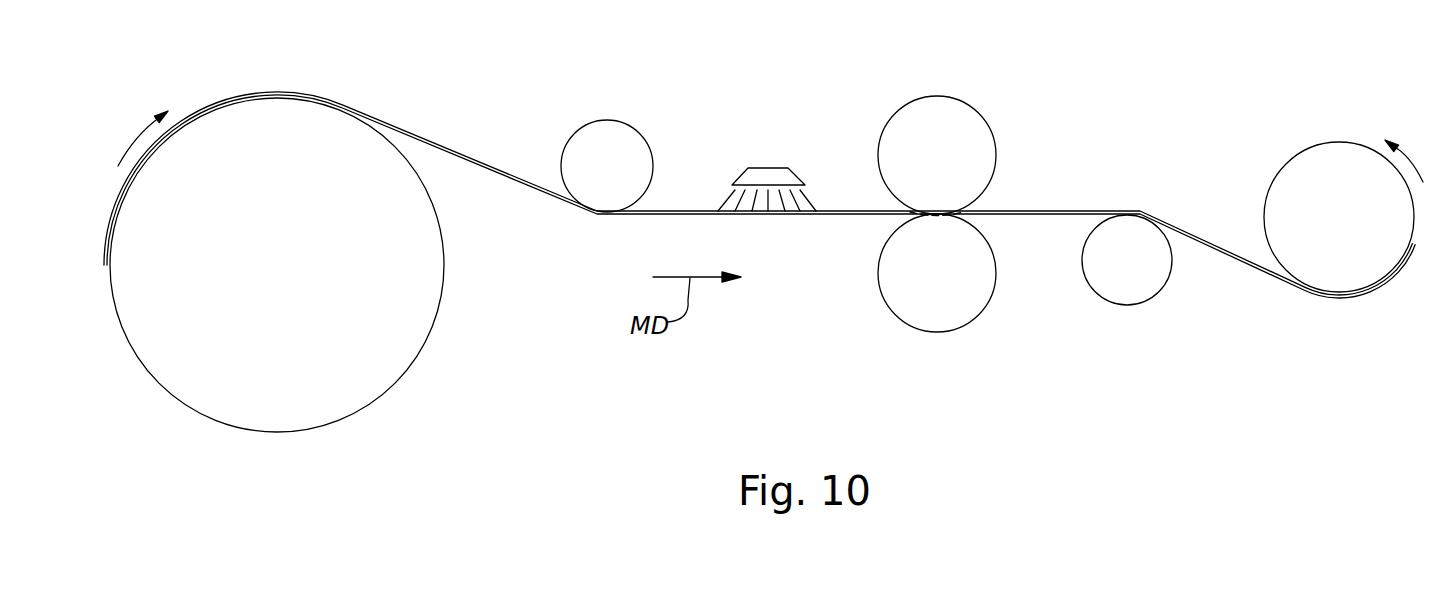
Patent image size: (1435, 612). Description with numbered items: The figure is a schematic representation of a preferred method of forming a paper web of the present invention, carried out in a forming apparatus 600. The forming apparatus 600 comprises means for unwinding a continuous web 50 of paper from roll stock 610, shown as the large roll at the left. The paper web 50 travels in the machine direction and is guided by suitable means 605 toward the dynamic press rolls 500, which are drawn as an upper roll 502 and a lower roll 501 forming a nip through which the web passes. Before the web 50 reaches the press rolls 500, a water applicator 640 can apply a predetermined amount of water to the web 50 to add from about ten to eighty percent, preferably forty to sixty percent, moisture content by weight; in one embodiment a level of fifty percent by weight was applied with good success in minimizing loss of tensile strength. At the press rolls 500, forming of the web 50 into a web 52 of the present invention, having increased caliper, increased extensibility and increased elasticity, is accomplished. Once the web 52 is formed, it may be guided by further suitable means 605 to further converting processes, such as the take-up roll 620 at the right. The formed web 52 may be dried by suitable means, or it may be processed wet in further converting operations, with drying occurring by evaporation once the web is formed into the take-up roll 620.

The continuous web of paper 50 is at (464, 154).
The paper web 52 is at (1215, 240).
The dynamic press rolls 500 is at (970, 204).
The lower nip roll 501 is at (917, 318).
The upper nip roll 502 is at (991, 158).
The forming apparatus 600 is at (576, 68).
The suitable guiding means 605 is at (626, 137).
The roll stock 610 is at (378, 386).
The take-up roll 620 is at (1352, 278).
The water applicator 640 is at (769, 173).